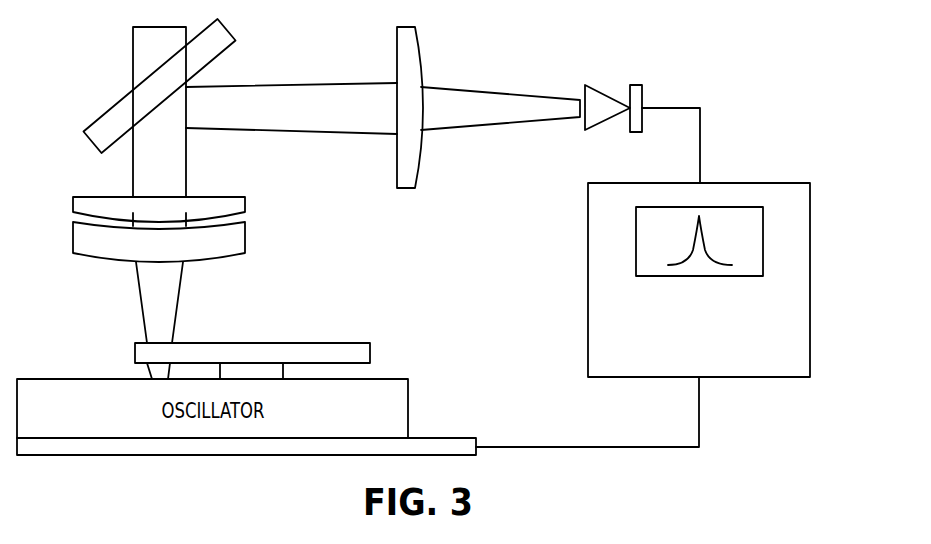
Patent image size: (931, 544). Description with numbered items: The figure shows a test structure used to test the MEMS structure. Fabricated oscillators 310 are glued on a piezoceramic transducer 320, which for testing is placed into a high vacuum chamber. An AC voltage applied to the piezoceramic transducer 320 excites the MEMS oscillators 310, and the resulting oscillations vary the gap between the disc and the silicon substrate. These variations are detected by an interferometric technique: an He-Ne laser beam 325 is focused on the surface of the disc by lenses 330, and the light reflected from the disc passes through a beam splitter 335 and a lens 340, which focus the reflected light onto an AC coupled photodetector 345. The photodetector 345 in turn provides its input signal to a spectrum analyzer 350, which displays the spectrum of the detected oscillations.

The oscillator 310 is at (310, 342).
The piezoceramic transducer 320 is at (442, 437).
The He-Ne laser beam 325 is at (142, 297).
The lenses 330 is at (98, 195).
The beam splitter 335 is at (223, 27).
The lens 340 is at (418, 45).
The AC coupled photodetector 345 is at (608, 92).
The spectrum analyzer 350 is at (758, 180).